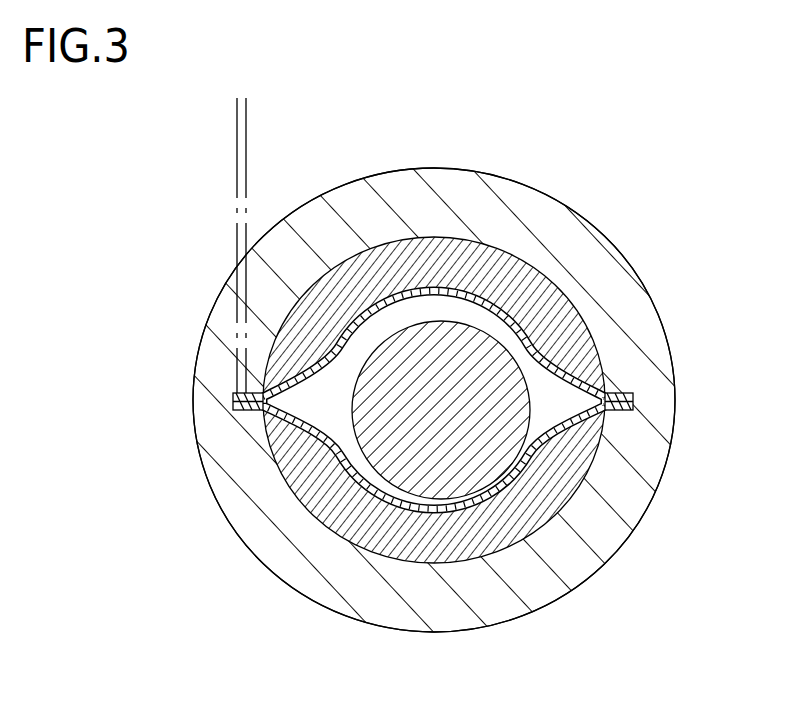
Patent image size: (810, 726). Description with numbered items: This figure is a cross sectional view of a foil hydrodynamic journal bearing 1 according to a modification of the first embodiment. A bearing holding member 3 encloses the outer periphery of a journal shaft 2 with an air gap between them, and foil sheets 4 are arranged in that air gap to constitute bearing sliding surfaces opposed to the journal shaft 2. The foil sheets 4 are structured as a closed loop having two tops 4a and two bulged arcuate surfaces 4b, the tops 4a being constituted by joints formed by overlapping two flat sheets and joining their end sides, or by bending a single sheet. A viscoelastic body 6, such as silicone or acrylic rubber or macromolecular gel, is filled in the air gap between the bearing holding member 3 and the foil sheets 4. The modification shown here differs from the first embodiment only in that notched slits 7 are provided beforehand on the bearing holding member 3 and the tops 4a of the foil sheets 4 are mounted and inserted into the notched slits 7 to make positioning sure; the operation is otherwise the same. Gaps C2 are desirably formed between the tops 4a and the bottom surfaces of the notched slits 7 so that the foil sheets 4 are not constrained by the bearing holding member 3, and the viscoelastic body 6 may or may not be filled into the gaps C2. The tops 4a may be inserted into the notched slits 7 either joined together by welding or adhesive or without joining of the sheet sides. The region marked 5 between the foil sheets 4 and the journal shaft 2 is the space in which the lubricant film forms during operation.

The foil hydrodynamic journal bearing 1 is at (599, 176).
The journal shaft 2 is at (505, 306).
The bearing holding member 3 is at (632, 308).
The foil sheets 4 is at (507, 318).
The tops 4a is at (630, 430).
The bulged arcuate surfaces 4b is at (453, 357).
The gap 5 is at (417, 310).
The viscoelastic body 6 is at (383, 240).
The notched slits 7 is at (633, 394).
The gaps C2 is at (264, 110).